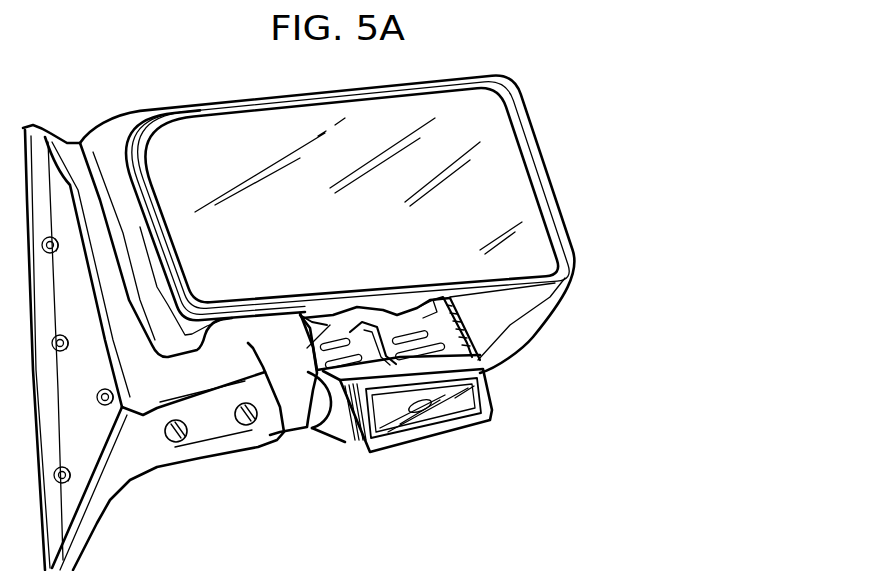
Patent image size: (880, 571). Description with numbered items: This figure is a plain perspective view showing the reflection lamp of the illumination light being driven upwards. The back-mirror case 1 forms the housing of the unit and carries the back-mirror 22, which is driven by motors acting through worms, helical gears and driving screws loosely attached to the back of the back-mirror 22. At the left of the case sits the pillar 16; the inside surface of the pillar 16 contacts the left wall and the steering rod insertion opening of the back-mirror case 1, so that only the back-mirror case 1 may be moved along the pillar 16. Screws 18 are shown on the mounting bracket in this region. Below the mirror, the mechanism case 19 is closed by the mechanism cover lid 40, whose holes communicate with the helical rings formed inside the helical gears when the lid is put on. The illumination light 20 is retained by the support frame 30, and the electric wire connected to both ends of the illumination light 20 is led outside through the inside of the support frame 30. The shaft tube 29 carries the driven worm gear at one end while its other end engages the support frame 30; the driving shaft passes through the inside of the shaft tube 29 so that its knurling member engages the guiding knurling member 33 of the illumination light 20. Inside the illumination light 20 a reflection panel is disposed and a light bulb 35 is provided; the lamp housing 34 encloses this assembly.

The back-mirror case 1 is at (113, 147).
The back-mirror 22 is at (218, 133).
The pillar 16 is at (88, 507).
The fastening screw 18 is at (173, 440).
The mechanism case 19 is at (300, 405).
The illumination light 20 is at (352, 422).
The shaft tube 29 is at (343, 316).
The support frame 30 is at (423, 313).
The guiding knurling member 33 is at (370, 330).
The lamp housing 34 is at (460, 420).
The light bulb 35 is at (420, 405).
The mechanism cover lid 40 is at (322, 328).